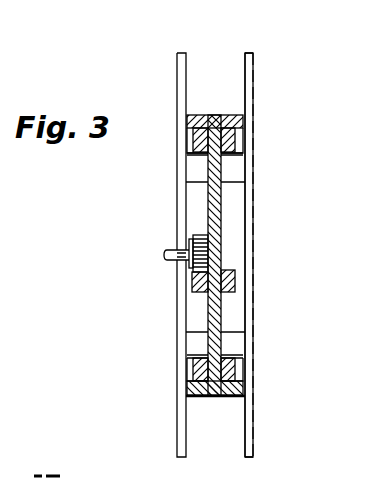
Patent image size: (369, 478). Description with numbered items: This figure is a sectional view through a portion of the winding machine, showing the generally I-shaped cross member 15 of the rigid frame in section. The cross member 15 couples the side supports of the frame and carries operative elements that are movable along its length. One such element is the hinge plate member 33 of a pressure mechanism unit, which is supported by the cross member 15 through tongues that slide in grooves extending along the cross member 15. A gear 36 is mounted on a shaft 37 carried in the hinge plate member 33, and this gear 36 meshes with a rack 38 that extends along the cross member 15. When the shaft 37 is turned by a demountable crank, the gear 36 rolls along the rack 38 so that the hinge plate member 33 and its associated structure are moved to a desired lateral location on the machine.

The hinge plate member 33 is at (177, 108).
The cross member 15 is at (222, 220).
The gear 36 is at (192, 237).
The shaft 37 is at (165, 256).
The rack 38 is at (194, 280).